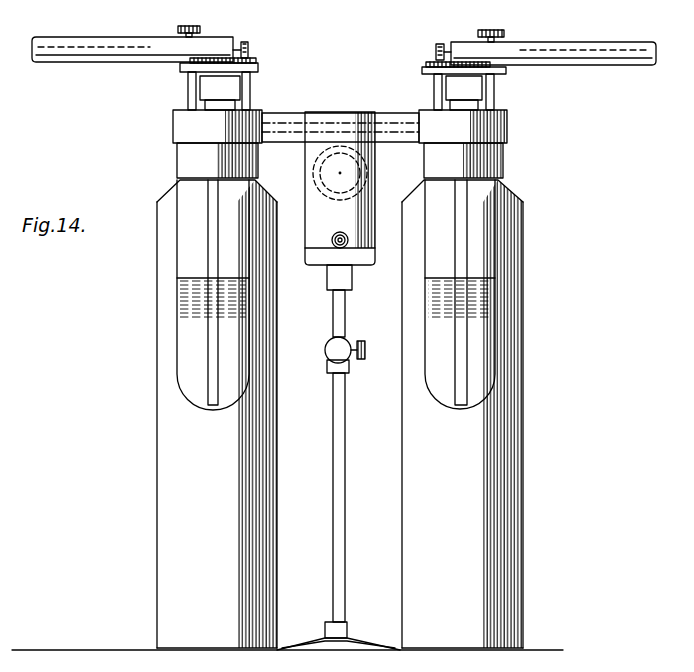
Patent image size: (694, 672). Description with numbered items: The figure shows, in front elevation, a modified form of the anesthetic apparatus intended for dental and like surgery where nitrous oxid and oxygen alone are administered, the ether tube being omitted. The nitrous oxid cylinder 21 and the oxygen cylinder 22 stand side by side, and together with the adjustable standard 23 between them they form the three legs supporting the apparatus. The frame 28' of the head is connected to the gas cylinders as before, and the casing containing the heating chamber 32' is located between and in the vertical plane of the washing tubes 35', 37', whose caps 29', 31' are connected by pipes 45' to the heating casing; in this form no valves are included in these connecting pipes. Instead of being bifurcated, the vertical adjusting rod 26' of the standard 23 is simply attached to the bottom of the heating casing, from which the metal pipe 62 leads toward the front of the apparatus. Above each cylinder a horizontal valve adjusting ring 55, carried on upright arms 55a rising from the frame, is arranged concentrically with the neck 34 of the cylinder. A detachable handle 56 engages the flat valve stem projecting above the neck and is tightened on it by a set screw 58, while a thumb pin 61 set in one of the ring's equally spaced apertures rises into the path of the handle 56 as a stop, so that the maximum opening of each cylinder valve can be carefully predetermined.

The nitrous oxid cylinder 21 is at (158, 441).
The oxygen cylinder 22 is at (524, 452).
The adjustable standard 23 is at (321, 409).
The vertical adjusting rod 26' is at (324, 319).
The frame 28' is at (340, 112).
The cap of washing tube 29' is at (188, 144).
The cap of washing tube 31' is at (483, 144).
The heating casing 32' is at (340, 188).
The neck of gas cylinder 34 is at (222, 90).
The washing tube 35' is at (173, 295).
The washing tube 37' is at (493, 294).
The pipe 45' is at (337, 151).
The valve adjusting ring 55 is at (215, 58).
The upright arm 55a is at (188, 84).
The detachable handle 56 is at (80, 38).
The set screw 58 is at (245, 42).
The thumb pin 61 is at (189, 26).
The metal pipe 62 is at (347, 246).